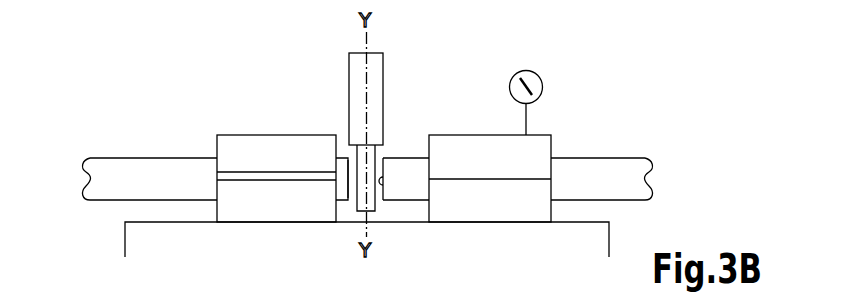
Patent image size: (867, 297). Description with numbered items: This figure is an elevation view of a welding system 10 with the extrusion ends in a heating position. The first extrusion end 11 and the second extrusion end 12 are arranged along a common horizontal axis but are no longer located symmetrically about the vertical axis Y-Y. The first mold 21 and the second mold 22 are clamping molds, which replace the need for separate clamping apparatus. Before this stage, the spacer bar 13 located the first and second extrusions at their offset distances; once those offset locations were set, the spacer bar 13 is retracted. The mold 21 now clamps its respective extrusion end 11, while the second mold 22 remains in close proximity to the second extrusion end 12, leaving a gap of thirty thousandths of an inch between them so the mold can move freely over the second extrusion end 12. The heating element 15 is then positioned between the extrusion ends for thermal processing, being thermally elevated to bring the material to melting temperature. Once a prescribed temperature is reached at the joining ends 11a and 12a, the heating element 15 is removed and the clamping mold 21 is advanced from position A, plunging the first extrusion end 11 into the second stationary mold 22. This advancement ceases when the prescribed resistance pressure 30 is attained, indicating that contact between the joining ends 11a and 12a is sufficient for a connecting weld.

The pipe cutting apparatus 10 is at (290, 95).
The first extrusion end 11 is at (605, 157).
The joining end of first extrusion 11a is at (383, 183).
The second extrusion end 12 is at (115, 157).
The joining end of second extrusion 12a is at (358, 184).
The spacer bar 13 is at (373, 63).
The heating element 15 is at (376, 205).
The first clamping mold 21 is at (473, 135).
The second mold 22 is at (253, 135).
The resistance pressure 30 is at (543, 83).
The position A is at (431, 222).